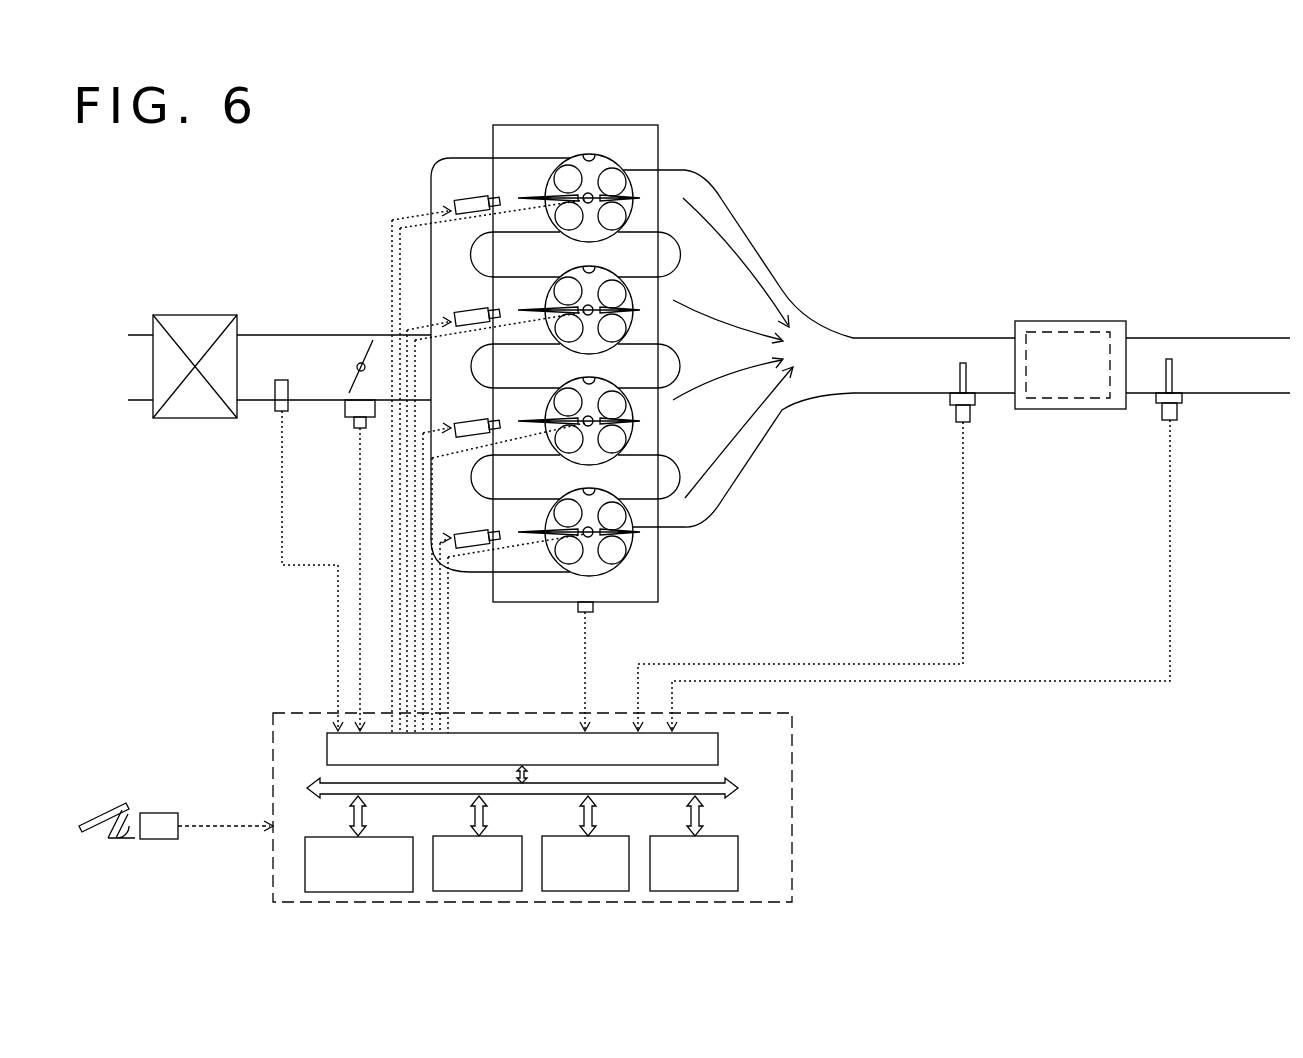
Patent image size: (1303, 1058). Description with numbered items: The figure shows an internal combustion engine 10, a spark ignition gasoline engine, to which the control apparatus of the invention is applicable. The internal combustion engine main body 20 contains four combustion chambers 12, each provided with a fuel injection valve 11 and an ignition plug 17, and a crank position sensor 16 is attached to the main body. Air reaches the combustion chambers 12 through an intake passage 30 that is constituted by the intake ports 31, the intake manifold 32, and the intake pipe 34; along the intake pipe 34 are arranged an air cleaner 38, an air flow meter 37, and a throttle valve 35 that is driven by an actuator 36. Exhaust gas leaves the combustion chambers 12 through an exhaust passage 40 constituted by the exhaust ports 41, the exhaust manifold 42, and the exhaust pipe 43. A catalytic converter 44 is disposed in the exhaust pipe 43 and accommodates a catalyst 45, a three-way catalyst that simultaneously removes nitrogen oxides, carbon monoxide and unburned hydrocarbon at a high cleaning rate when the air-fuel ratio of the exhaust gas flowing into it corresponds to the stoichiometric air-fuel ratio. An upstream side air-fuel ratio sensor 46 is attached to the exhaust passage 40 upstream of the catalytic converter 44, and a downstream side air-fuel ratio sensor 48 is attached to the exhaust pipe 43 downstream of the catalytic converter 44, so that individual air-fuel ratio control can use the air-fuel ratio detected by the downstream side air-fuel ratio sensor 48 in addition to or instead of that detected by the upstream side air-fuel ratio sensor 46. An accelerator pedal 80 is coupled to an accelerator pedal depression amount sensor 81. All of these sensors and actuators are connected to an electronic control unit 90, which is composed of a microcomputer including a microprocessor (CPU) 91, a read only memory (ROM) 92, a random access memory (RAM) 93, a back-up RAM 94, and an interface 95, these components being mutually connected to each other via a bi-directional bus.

The internal combustion engine 10 is at (358, 147).
The fuel injection valve 11 is at (478, 192).
The combustion chamber 12 is at (584, 155).
The crank position sensor 16 is at (592, 612).
The ignition plug 17 is at (598, 188).
The internal combustion engine main body 20 is at (670, 155).
The intake passage 30 is at (289, 252).
The intake port 31 is at (501, 172).
The intake manifold 32 is at (443, 167).
The intake pipe 34 is at (283, 334).
The throttle valve 35 is at (355, 363).
The actuator 36 is at (366, 430).
The air flow meter 37 is at (290, 413).
The air cleaner 38 is at (193, 419).
The exhaust passage 40 is at (980, 309).
The exhaust port 41 is at (650, 234).
The exhaust manifold 42 is at (728, 497).
The exhaust pipe 43 is at (1212, 338).
The catalytic converter 44 is at (1070, 371).
The catalyst 45 is at (1060, 402).
The upstream side air-fuel ratio sensor 46 is at (970, 418).
The downstream side air-fuel ratio sensor 48 is at (1177, 418).
The accelerator pedal 80 is at (122, 808).
The accelerator pedal depression amount sensor 81 is at (160, 813).
The electronic control unit 90 is at (562, 807).
The microprocessor (CPU) 91 is at (714, 836).
The read only memory (ROM) 92 is at (609, 836).
The random access memory (RAM) 93 is at (499, 836).
The back-up RAM 94 is at (378, 836).
The interface 95 is at (718, 745).